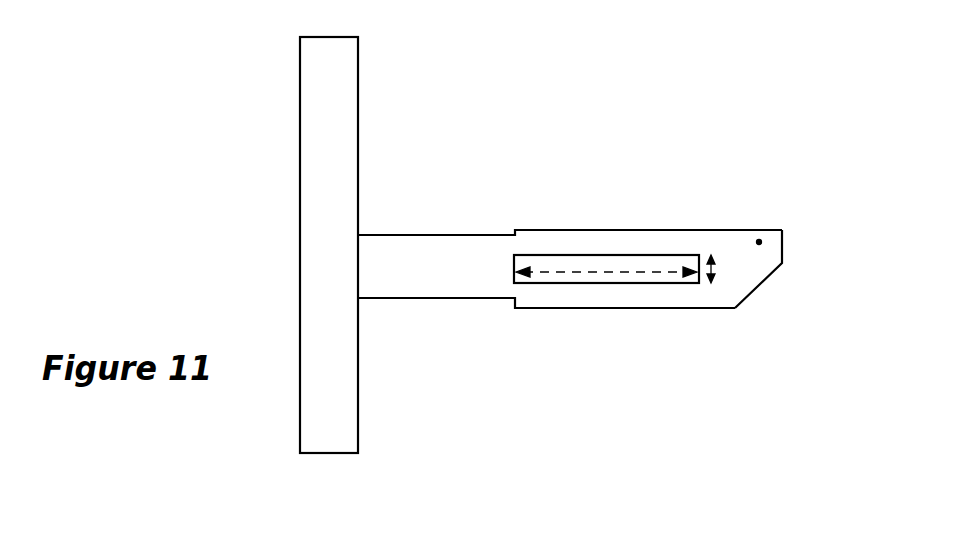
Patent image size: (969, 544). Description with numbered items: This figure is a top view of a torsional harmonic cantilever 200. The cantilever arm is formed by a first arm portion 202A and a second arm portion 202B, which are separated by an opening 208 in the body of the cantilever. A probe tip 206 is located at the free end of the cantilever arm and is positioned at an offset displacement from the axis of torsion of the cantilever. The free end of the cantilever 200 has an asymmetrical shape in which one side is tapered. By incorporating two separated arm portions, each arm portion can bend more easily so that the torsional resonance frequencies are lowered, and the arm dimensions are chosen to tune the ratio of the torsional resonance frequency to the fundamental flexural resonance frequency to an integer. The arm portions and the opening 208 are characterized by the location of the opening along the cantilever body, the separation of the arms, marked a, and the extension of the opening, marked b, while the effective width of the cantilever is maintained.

The torsional harmonic cantilever 200 is at (576, 245).
The first arm portion 202A is at (568, 230).
The second arm portion 202B is at (677, 309).
The probe tip 206 is at (759, 242).
The opening 208 is at (555, 284).